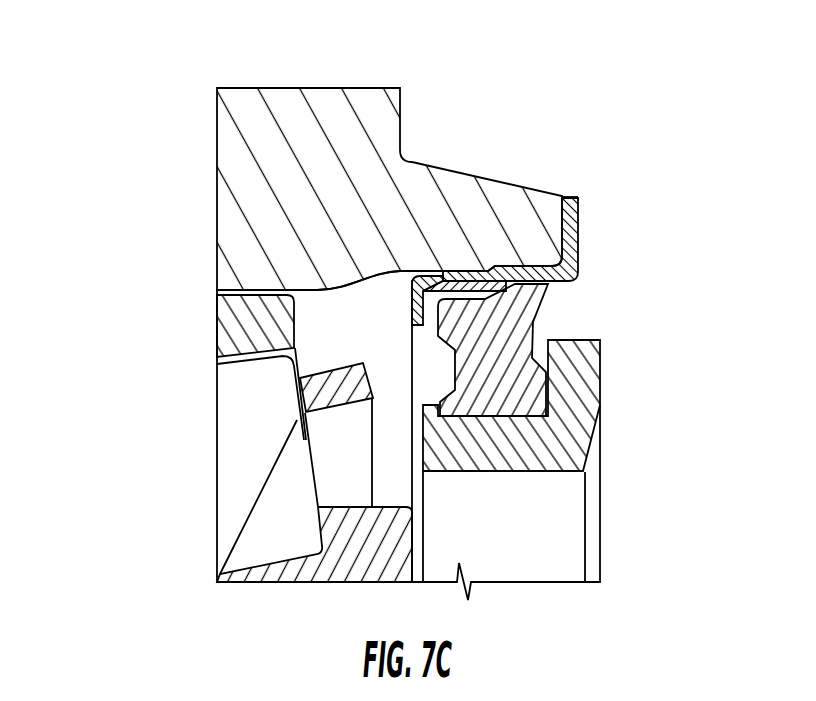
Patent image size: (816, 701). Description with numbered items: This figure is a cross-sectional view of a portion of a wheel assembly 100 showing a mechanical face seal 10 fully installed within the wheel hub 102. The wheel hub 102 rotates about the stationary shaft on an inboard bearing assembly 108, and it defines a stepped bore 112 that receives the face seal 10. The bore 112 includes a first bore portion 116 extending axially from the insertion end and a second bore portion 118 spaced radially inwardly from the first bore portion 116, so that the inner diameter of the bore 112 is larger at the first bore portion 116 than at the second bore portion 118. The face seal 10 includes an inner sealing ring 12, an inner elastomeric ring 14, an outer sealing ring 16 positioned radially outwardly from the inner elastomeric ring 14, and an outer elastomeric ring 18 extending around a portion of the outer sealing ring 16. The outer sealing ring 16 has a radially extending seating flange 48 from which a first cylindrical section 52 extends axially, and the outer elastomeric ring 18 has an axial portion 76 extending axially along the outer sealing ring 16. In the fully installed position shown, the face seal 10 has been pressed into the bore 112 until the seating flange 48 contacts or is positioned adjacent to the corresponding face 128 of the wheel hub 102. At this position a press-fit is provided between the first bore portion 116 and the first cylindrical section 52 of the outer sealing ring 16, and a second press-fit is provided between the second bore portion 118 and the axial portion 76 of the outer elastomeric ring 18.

The wheel assembly 100 is at (70, 98).
The wheel hub 102 is at (242, 177).
The second bore portion 118 is at (380, 278).
The inboard bearing assembly 108 is at (235, 500).
The bore 112 is at (322, 357).
The outer elastomeric ring 18 is at (411, 322).
The outer sealing ring 16 is at (580, 240).
The face of the wheel hub 128 is at (557, 213).
The first bore portion 116 is at (512, 280).
The seating flange 48 is at (580, 198).
The axial portion 76 is at (463, 275).
The first cylindrical section 52 is at (500, 270).
The inner elastomeric ring 14 is at (518, 389).
The face seal 10 is at (640, 445).
The inner sealing ring 12 is at (508, 455).